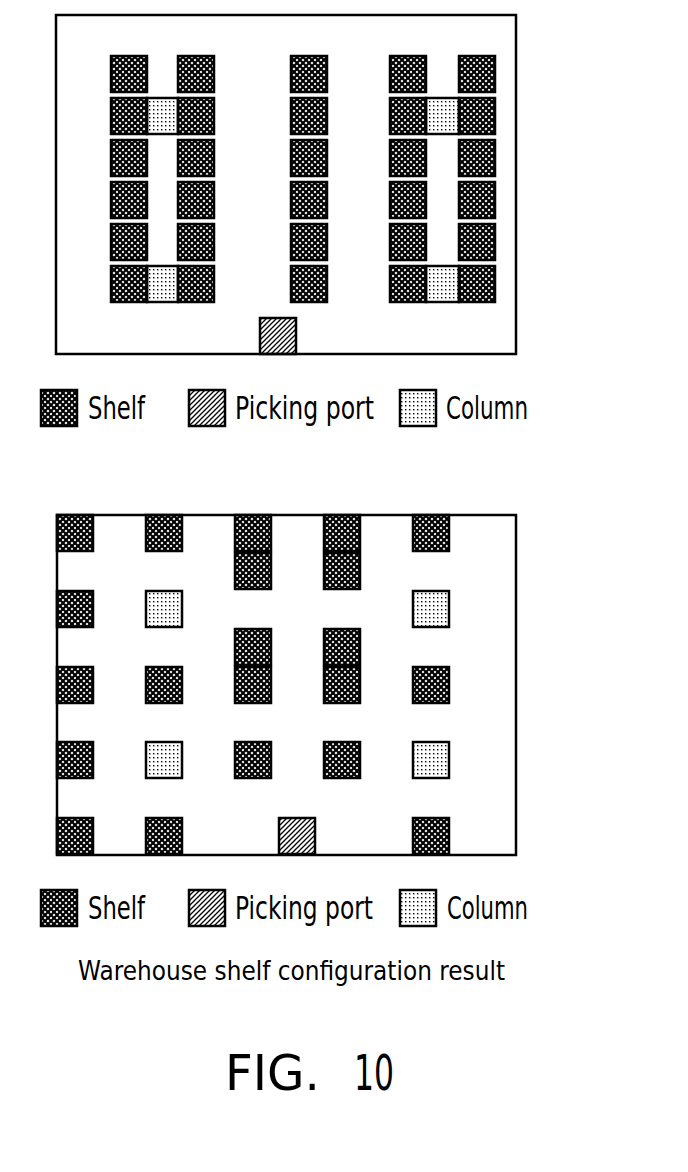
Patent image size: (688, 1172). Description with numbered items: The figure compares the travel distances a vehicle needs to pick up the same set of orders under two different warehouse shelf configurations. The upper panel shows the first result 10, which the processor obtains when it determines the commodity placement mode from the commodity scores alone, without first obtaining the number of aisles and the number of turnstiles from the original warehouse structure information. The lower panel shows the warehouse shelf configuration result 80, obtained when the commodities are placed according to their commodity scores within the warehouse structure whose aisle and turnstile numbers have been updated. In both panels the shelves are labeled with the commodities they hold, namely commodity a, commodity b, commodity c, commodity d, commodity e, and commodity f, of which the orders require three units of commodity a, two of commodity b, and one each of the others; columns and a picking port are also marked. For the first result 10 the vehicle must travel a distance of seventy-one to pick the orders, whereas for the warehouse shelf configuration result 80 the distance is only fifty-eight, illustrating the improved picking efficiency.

The first result 10 is at (516, 184).
The warehouse shelf configuration result 80 is at (517, 683).
The commodity a is at (253, 518).
The commodity b is at (276, 421).
The commodity c is at (303, 343).
The commodity d is at (286, 303).
The commodity e is at (102, 341).
The commodity f is at (409, 303).